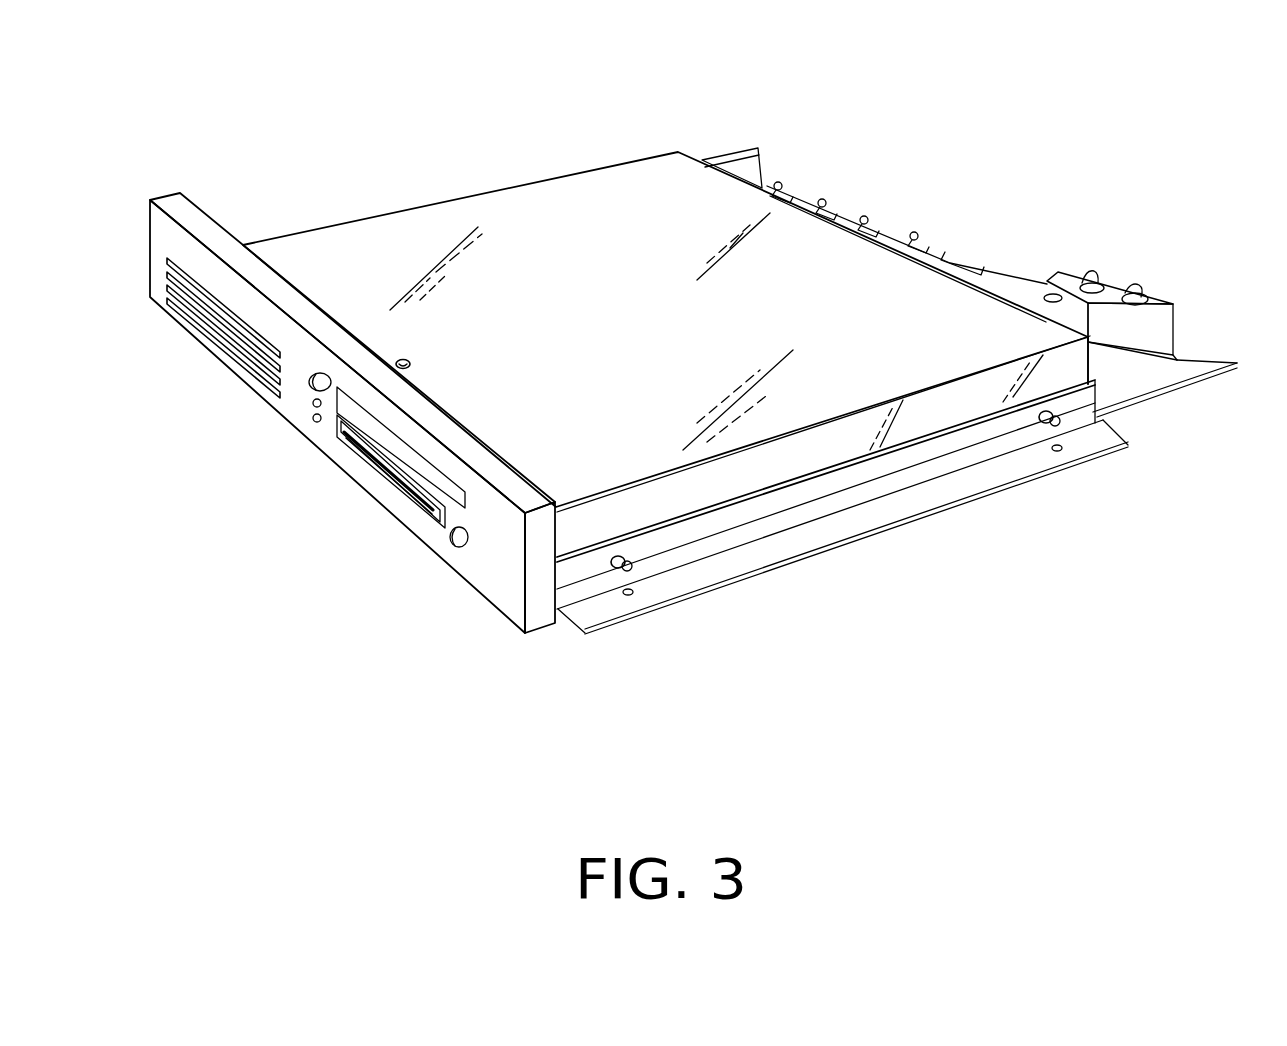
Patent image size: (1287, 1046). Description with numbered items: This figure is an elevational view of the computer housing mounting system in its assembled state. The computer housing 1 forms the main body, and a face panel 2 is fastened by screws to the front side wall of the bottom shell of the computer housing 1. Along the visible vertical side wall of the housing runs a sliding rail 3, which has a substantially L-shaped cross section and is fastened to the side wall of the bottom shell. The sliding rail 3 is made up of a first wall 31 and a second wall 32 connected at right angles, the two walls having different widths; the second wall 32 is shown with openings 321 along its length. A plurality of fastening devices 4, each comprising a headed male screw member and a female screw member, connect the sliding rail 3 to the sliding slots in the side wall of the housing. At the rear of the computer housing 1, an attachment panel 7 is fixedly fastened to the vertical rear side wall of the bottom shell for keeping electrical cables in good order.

The computer housing 1 is at (490, 224).
The face panel 2 is at (298, 405).
The sliding rail 3 is at (914, 519).
The first wall 31 is at (832, 487).
The second wall 32 is at (895, 510).
The mounting hole 321 is at (633, 600).
The fastening device 4 is at (623, 555).
The attachment panel 7 is at (955, 248).